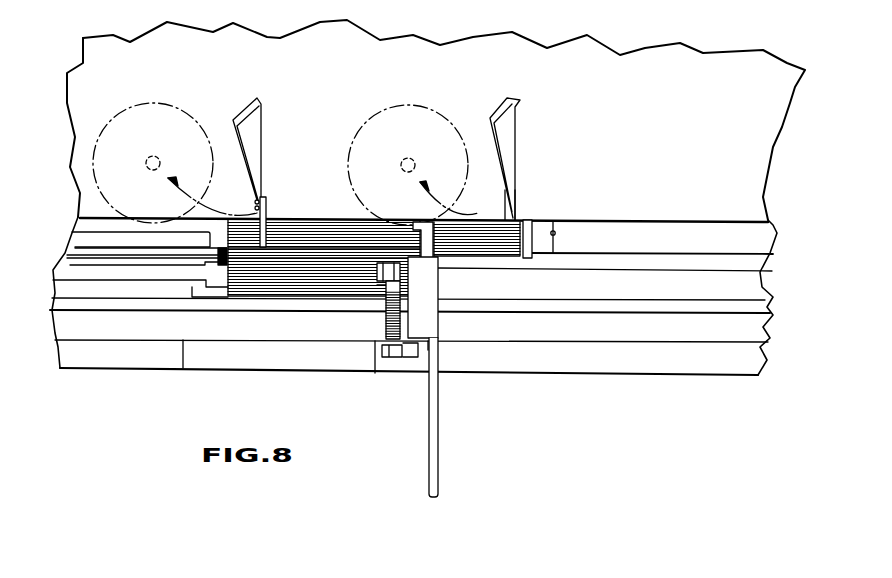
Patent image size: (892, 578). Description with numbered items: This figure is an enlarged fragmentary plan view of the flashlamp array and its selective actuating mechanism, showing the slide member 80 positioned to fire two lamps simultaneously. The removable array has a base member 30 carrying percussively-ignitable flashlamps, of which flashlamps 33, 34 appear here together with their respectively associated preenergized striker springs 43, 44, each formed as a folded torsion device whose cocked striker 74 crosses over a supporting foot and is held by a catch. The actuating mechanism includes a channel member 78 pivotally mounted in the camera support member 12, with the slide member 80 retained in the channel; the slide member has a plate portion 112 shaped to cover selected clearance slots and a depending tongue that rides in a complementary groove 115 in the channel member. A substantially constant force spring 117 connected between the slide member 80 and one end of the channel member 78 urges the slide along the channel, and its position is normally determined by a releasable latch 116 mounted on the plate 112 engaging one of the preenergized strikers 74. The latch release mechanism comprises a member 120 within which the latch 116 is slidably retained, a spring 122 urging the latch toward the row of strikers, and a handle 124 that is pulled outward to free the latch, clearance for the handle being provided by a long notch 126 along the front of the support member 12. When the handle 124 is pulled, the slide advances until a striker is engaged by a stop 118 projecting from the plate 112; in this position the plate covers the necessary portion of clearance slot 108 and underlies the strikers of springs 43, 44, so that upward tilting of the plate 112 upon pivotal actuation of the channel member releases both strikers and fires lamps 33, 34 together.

The support member 12 is at (183, 369).
The base member 30 is at (760, 175).
The flashlamp 33 is at (405, 104).
The flashlamp 34 is at (188, 112).
The striker spring 43 is at (514, 100).
The striker spring 44 is at (263, 118).
The striker 74 is at (266, 220).
The channel member 78 is at (715, 220).
The slide member 80 is at (326, 240).
The clearance slot 108 is at (556, 231).
The plate portion 112 is at (441, 219).
The groove 115 is at (752, 272).
The releasable latch 116 is at (405, 219).
The constant force spring 117 is at (158, 262).
The stop 118 is at (542, 220).
The member 120 is at (438, 290).
The spring 122 is at (384, 318).
The handle 124 is at (440, 456).
The long notch 126 is at (594, 367).